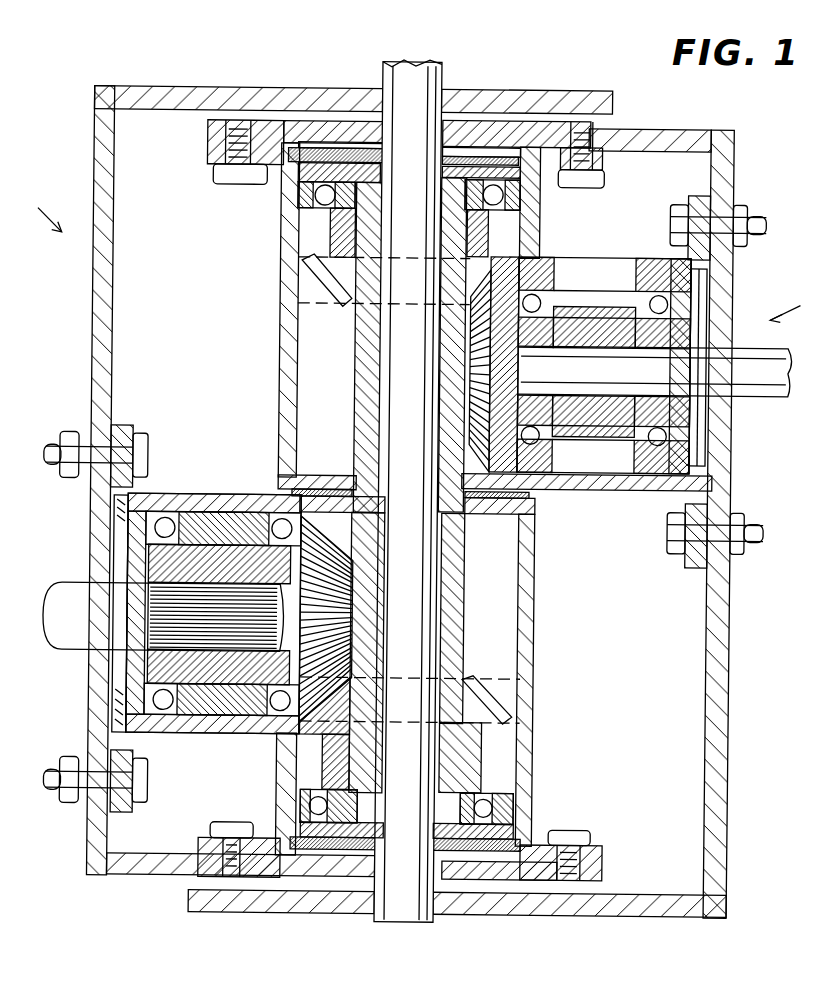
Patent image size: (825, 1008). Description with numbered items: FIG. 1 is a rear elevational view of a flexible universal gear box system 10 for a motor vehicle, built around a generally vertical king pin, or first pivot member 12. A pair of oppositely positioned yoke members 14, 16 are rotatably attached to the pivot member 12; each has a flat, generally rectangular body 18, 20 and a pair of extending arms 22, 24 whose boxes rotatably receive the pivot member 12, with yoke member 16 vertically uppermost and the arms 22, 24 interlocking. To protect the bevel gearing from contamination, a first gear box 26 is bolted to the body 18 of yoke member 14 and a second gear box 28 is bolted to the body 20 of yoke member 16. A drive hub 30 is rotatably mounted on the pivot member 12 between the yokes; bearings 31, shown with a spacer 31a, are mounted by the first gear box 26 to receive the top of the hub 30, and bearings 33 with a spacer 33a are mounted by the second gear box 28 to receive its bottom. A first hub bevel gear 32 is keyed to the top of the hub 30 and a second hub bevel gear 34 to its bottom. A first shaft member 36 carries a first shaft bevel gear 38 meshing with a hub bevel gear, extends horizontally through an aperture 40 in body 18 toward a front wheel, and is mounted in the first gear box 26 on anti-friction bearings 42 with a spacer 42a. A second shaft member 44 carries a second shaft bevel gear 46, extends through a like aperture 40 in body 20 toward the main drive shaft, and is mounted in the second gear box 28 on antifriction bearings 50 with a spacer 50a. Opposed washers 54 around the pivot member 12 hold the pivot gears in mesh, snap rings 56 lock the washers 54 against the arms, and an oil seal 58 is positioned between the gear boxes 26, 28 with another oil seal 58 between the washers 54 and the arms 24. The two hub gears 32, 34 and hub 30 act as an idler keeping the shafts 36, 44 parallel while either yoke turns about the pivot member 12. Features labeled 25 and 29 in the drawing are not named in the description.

The flexible universal gear box system 10 is at (37, 207).
The first pivot member 12 is at (422, 96).
The yoke member 14 is at (793, 308).
The yoke member 16 is at (90, 306).
The body 18 is at (733, 497).
The body 20 is at (100, 523).
The arm 22 is at (653, 900).
The arm 24 is at (280, 96).
The bolts 25 is at (745, 214).
The gear box 26 is at (722, 252).
The gear box 28 is at (538, 590).
The bolts 29 is at (62, 440).
The drive hub 30 is at (362, 400).
The bearings 31 is at (330, 144).
The spacer 31a is at (335, 245).
The first hub bevel gear 32 is at (322, 286).
The bearings 33 is at (513, 800).
The spacer 33a is at (482, 740).
The second hub bevel gear 34 is at (478, 676).
The first shaft member 36 is at (755, 400).
The first shaft bevel gear 38 is at (490, 420).
The aperture 40 is at (776, 363).
The anti-friction bearings 42 is at (572, 294).
The spacer 42a is at (612, 320).
The second shaft member 44 is at (72, 592).
The second shaft bevel gear 46 is at (268, 705).
The antifriction bearings 50 is at (160, 510).
The spacer 50a is at (222, 505).
The washers 54 is at (330, 183).
The snap rings 56 is at (300, 163).
The oil seal 58 is at (578, 188).